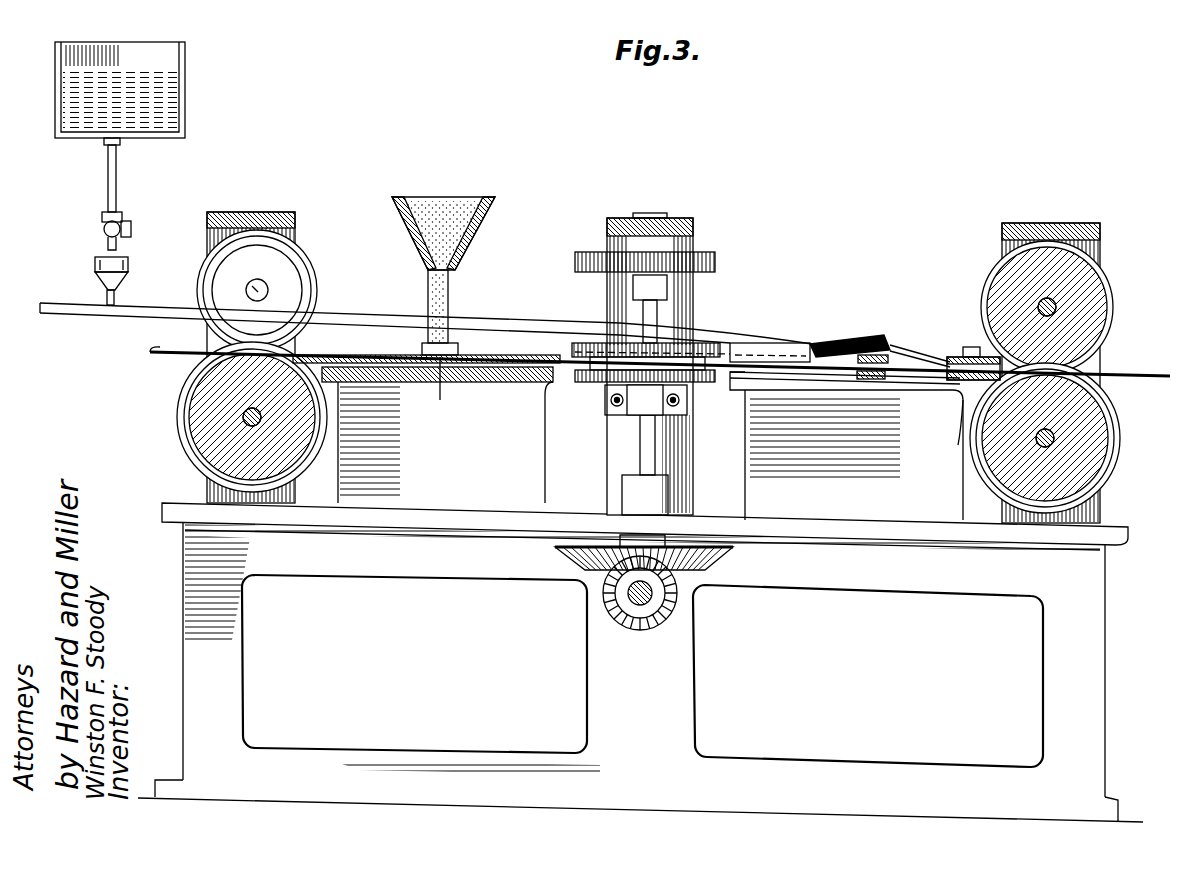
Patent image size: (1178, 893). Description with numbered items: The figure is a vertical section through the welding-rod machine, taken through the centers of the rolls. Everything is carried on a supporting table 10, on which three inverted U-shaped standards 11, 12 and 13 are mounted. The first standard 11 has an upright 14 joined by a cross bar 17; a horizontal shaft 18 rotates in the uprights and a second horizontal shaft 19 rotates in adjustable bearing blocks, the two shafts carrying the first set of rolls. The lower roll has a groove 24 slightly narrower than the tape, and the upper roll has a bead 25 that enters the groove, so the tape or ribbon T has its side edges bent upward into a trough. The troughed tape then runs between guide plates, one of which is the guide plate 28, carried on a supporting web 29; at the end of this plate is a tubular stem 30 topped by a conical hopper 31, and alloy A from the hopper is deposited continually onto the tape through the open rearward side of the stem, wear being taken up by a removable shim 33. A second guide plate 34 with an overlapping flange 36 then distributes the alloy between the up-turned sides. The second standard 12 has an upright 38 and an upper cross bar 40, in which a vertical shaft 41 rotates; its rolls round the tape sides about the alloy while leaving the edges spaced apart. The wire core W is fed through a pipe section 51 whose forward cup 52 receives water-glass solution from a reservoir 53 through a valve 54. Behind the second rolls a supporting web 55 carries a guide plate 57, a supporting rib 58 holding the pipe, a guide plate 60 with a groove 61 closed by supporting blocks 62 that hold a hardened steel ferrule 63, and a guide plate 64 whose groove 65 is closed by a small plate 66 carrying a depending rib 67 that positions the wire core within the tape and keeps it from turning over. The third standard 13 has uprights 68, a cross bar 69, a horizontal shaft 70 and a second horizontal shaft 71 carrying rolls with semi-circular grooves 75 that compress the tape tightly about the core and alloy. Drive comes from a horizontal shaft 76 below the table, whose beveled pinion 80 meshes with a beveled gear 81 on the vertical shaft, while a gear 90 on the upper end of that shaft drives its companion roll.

The supporting table 10 is at (200, 549).
The standard 11 is at (239, 339).
The standard 12 is at (634, 354).
The standard 13 is at (1067, 355).
The upright 14 is at (221, 346).
The cross bar 17 is at (245, 225).
The horizontal shaft 18 is at (245, 420).
The second horizontal shaft 19 is at (266, 288).
The groove 24 is at (224, 417).
The bead or projection 25 is at (277, 290).
The guide plate 28 is at (356, 358).
The supporting web 29 is at (345, 482).
The tubular stem 30 is at (428, 312).
The conical hopper 31 is at (439, 276).
The removable shim 33 is at (444, 392).
The guide plate 34 is at (488, 356).
The overlapping flange 36 is at (540, 362).
The upright 38 is at (665, 438).
The upper cross bar 40 is at (607, 224).
The vertical shaft 41 is at (657, 312).
The pipe section 51 is at (426, 305).
The cup 52 is at (130, 268).
The reservoir 53 is at (188, 112).
The valve 54 is at (122, 222).
The supporting web 55 is at (770, 490).
The guide plate 57 is at (745, 380).
The supporting rib 58 is at (748, 350).
The guide plate 60 is at (881, 385).
The groove 61 is at (866, 382).
The supporting blocks 62 is at (862, 344).
The hardened steel ferrule 63 is at (895, 350).
The guide plate 64 is at (960, 383).
The groove 65 is at (960, 357).
The small plate 66 is at (975, 347).
The depending rib 67 is at (958, 440).
The uprights 68 is at (1093, 512).
The cross bar 69 is at (1028, 228).
The horizontal shaft 70 is at (1056, 440).
The second horizontal shaft 71 is at (1058, 308).
The semi-circular grooves 75 is at (1067, 377).
The horizontal shaft 76 is at (652, 597).
The beveled pinion 80 is at (641, 598).
The beveled gear 81 is at (560, 560).
The gear 90 is at (575, 262).
The alloy A is at (476, 232).
The wire core W is at (50, 303).
The tape or ribbon T is at (925, 390).